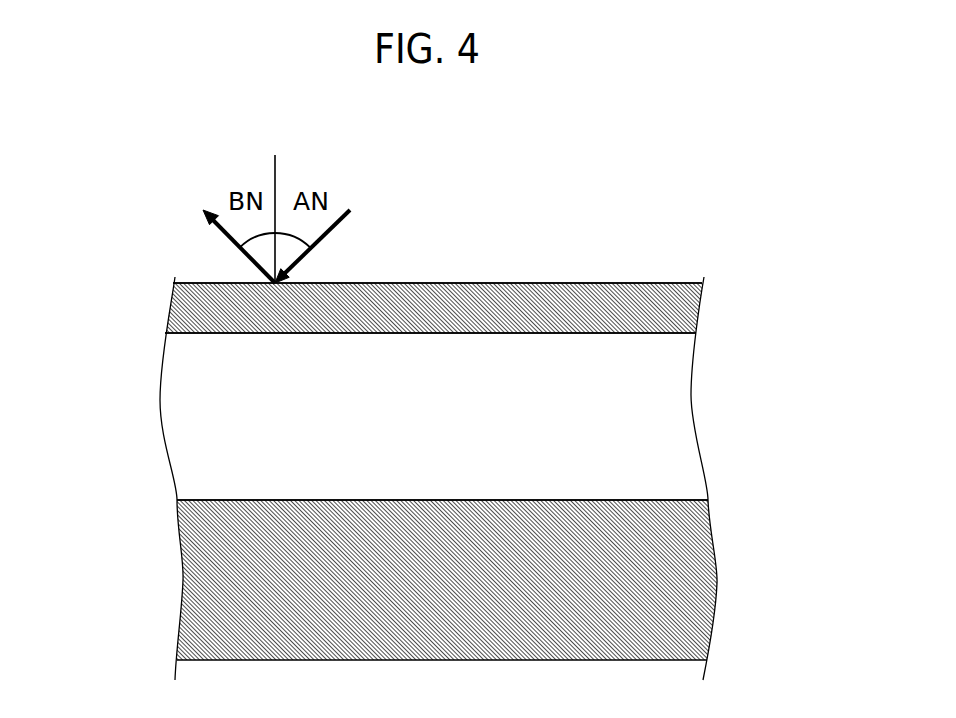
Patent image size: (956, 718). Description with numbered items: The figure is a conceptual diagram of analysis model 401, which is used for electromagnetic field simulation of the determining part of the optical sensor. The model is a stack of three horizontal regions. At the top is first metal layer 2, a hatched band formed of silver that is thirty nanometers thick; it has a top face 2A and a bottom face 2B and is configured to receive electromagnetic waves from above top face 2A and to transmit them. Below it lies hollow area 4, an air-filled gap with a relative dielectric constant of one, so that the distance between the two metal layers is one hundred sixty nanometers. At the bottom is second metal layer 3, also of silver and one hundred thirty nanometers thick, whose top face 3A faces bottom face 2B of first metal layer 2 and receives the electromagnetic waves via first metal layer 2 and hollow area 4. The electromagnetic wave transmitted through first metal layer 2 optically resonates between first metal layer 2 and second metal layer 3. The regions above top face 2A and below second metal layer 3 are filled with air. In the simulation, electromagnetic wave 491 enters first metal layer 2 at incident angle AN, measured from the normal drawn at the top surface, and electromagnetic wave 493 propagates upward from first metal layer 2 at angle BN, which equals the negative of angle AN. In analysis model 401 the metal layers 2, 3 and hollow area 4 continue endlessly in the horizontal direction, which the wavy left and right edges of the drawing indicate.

The analysis model 401 is at (768, 225).
The first metal layer 2 is at (680, 313).
The top face 2A is at (621, 282).
The bottom face 2B is at (217, 333).
The hollow area 4 is at (675, 442).
The second metal layer 3 is at (680, 612).
The top face 3A is at (230, 500).
The electromagnetic wave 491 is at (340, 228).
The electromagnetic wave 493 is at (223, 237).